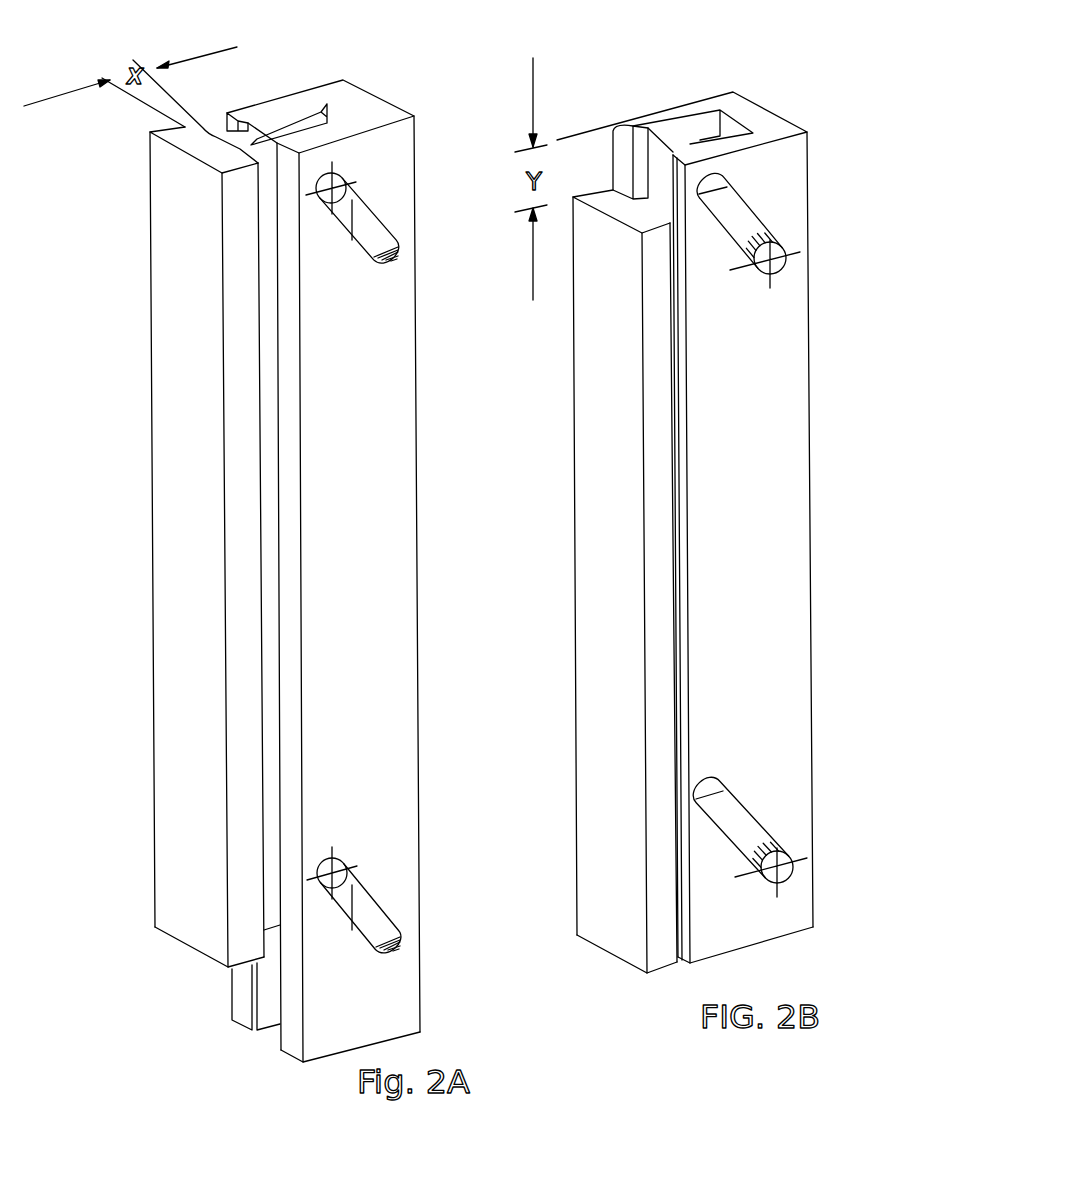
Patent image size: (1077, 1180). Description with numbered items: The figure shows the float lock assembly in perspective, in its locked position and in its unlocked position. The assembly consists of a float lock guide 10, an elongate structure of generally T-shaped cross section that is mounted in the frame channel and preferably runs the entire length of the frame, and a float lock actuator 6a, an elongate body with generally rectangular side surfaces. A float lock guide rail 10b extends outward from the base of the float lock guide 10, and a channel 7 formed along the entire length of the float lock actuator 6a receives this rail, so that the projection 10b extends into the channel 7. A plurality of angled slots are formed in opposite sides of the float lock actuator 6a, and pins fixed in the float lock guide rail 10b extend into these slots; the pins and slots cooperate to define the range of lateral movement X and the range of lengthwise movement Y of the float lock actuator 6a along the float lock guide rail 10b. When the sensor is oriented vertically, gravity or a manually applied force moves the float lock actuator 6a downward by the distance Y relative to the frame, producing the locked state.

In FIG. 2A, the float lock actuator 6a is at (377, 545).
In FIG. 2B, the float lock actuator 6a is at (726, 502).
In FIG. 2A, the channel 7 is at (317, 100).
In FIG. 2B, the channel 7 is at (720, 137).
In FIG. 2A, the float lock guide 10 is at (182, 325).
In FIG. 2B, the float lock guide 10 is at (610, 462).
In FIG. 2A, the float lock guide rail 10b is at (279, 128).